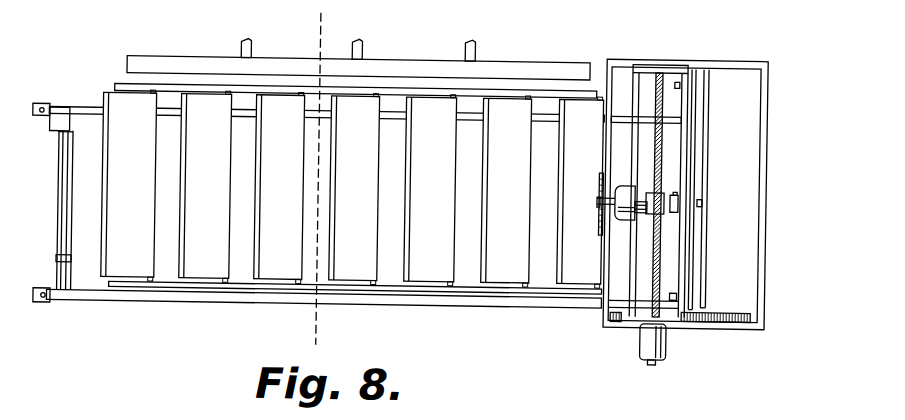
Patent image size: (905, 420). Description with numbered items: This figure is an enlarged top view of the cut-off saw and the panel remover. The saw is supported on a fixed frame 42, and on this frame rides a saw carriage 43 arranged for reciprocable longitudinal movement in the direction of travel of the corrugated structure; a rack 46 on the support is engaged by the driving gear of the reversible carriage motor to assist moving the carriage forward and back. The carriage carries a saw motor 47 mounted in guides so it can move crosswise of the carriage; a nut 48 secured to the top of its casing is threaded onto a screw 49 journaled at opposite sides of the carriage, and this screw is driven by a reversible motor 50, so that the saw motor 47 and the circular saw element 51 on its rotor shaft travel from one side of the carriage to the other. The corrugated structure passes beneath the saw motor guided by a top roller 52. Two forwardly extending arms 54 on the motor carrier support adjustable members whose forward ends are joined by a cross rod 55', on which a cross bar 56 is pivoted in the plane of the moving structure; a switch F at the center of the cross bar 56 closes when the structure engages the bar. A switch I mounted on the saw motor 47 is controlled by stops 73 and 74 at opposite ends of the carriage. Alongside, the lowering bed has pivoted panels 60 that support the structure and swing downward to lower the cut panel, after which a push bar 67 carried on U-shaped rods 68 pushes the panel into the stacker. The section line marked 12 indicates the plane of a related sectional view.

The fixed frame 42 is at (760, 197).
The saw carriage 43 is at (678, 66).
The rack 46 is at (719, 308).
The saw motor 47 is at (665, 186).
The nut 48 is at (653, 204).
The screw 49 is at (659, 158).
The screw motor 50 is at (650, 336).
The circular saw element 51 is at (600, 220).
The top roller 52 is at (698, 265).
The forwardly extending arms 54 is at (469, 118).
The cross rod 55' is at (45, 216).
The cross bar 56 is at (70, 217).
The pivoted panels 60 is at (206, 263).
The push bar 67 is at (403, 64).
The U-shaped rods 68 is at (474, 45).
The stop 73 is at (679, 81).
The stop 74 is at (676, 297).
The section line 12 is at (331, 26).
The switch F is at (56, 125).
The switch I is at (677, 196).